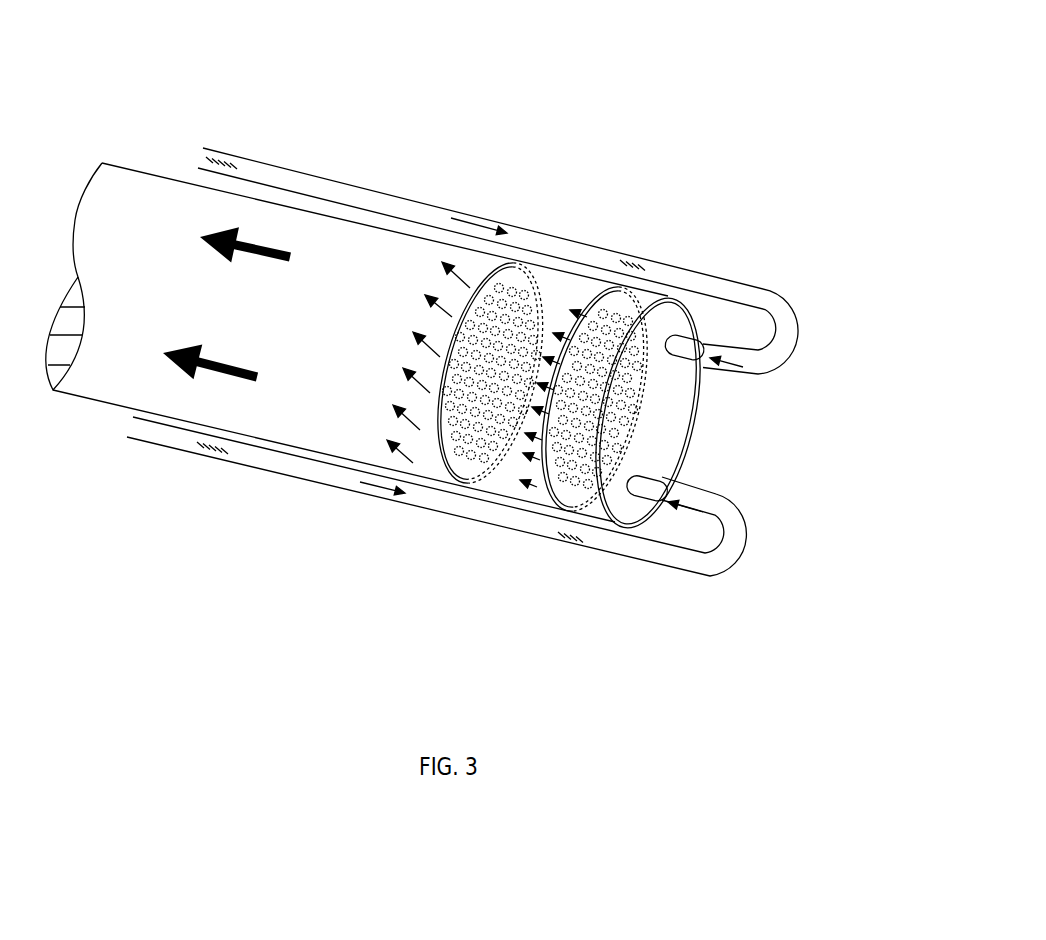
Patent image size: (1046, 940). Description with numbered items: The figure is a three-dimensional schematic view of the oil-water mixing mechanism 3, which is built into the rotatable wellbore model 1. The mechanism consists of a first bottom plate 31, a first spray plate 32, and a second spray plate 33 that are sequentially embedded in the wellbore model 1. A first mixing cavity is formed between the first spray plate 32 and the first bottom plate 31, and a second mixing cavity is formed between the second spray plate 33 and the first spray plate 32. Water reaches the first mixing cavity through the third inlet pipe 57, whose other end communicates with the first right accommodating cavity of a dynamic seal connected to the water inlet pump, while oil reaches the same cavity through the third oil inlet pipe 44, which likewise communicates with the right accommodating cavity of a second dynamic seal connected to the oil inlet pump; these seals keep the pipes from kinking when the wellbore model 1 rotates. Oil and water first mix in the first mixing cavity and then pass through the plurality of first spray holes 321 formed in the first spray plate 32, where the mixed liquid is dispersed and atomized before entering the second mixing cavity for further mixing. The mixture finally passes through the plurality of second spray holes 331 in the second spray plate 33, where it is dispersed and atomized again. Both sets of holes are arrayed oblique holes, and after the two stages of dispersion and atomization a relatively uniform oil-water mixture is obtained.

The oil-water mixing mechanism 3 is at (155, 88).
The wellbore model 1 is at (353, 257).
The first bottom plate 31 is at (670, 413).
The first spray plate 32 is at (563, 500).
The first spray holes 321 is at (612, 312).
The second spray plate 33 is at (463, 480).
The second spray holes 331 is at (513, 322).
The third inlet pipe 57 is at (730, 285).
The third oil inlet pipe 44 is at (677, 560).